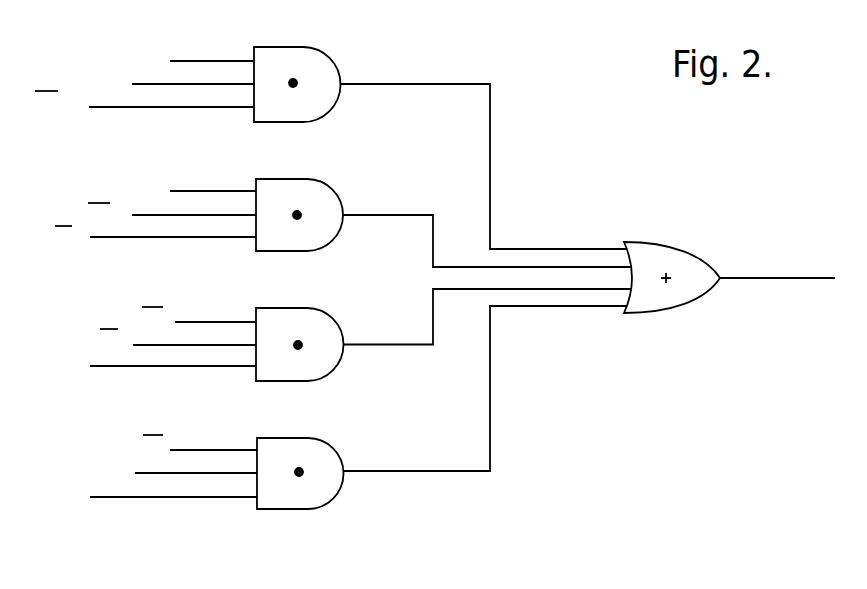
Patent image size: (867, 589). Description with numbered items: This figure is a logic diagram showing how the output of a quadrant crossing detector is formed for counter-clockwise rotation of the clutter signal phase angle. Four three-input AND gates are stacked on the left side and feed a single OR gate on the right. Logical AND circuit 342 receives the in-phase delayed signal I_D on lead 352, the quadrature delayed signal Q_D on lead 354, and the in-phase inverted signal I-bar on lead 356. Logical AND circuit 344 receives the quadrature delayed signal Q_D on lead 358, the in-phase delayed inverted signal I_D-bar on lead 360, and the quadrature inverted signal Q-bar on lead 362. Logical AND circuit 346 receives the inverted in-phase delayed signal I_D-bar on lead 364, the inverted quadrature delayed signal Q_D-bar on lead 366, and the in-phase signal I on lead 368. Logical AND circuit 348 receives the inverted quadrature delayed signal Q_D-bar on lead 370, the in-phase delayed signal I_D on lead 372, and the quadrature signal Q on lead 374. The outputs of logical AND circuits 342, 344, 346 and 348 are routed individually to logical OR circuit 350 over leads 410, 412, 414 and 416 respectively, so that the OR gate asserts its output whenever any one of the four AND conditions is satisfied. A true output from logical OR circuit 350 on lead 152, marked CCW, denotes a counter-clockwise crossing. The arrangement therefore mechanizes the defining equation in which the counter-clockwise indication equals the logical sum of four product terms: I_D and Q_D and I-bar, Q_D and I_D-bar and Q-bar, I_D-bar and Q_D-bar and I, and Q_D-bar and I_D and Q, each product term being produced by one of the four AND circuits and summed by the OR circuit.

The logical AND circuit 342 is at (336, 72).
The logical AND circuit 344 is at (332, 200).
The logical AND circuit 346 is at (328, 320).
The logical AND circuit 348 is at (331, 462).
The logical OR circuit 350 is at (675, 253).
The lead 352 is at (207, 60).
The lead 354 is at (167, 86).
The lead 356 is at (208, 108).
The lead 358 is at (230, 191).
The lead 360 is at (230, 216).
The lead 362 is at (175, 238).
The lead 364 is at (228, 320).
The lead 366 is at (228, 346).
The lead 368 is at (181, 366).
The lead 370 is at (233, 450).
The lead 372 is at (237, 474).
The lead 374 is at (178, 498).
The lead 410 is at (491, 193).
The lead 412 is at (419, 215).
The lead 414 is at (395, 346).
The lead 416 is at (422, 473).
The lead 152 is at (788, 280).